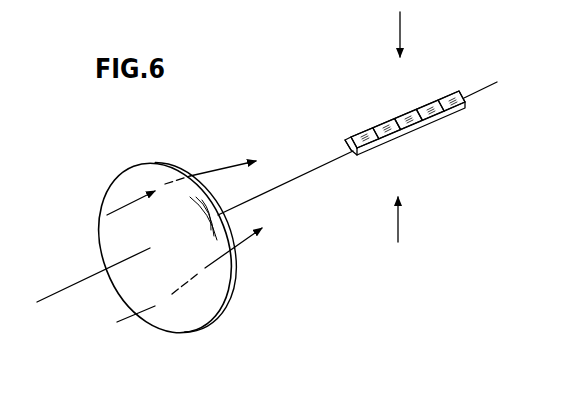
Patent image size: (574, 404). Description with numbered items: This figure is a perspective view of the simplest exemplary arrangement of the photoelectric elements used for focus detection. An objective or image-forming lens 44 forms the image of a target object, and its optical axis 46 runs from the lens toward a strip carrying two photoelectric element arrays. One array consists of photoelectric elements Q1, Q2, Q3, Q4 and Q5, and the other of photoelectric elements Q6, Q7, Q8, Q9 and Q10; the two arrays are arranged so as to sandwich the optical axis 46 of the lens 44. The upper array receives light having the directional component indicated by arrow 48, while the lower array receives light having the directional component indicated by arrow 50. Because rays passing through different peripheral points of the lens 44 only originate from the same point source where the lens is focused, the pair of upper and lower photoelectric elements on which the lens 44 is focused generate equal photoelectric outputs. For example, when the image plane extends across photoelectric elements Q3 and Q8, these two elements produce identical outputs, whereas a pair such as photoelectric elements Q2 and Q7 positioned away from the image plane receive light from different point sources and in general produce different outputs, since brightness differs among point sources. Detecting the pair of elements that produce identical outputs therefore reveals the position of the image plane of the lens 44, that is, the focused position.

The lens 44 is at (195, 322).
The optical axis 46 is at (296, 181).
The arrow 48 is at (401, 27).
The arrow 50 is at (398, 229).
The photoelectric element Q1 is at (355, 139).
The photoelectric element Q2 is at (378, 130).
The photoelectric element Q3 is at (401, 118).
The photoelectric element Q4 is at (424, 102).
The photoelectric element Q5 is at (453, 92).
The photoelectric element Q6 is at (361, 160).
The photoelectric element Q7 is at (395, 148).
The photoelectric element Q8 is at (421, 137).
The photoelectric element Q9 is at (440, 132).
The photoelectric element Q10 is at (461, 115).